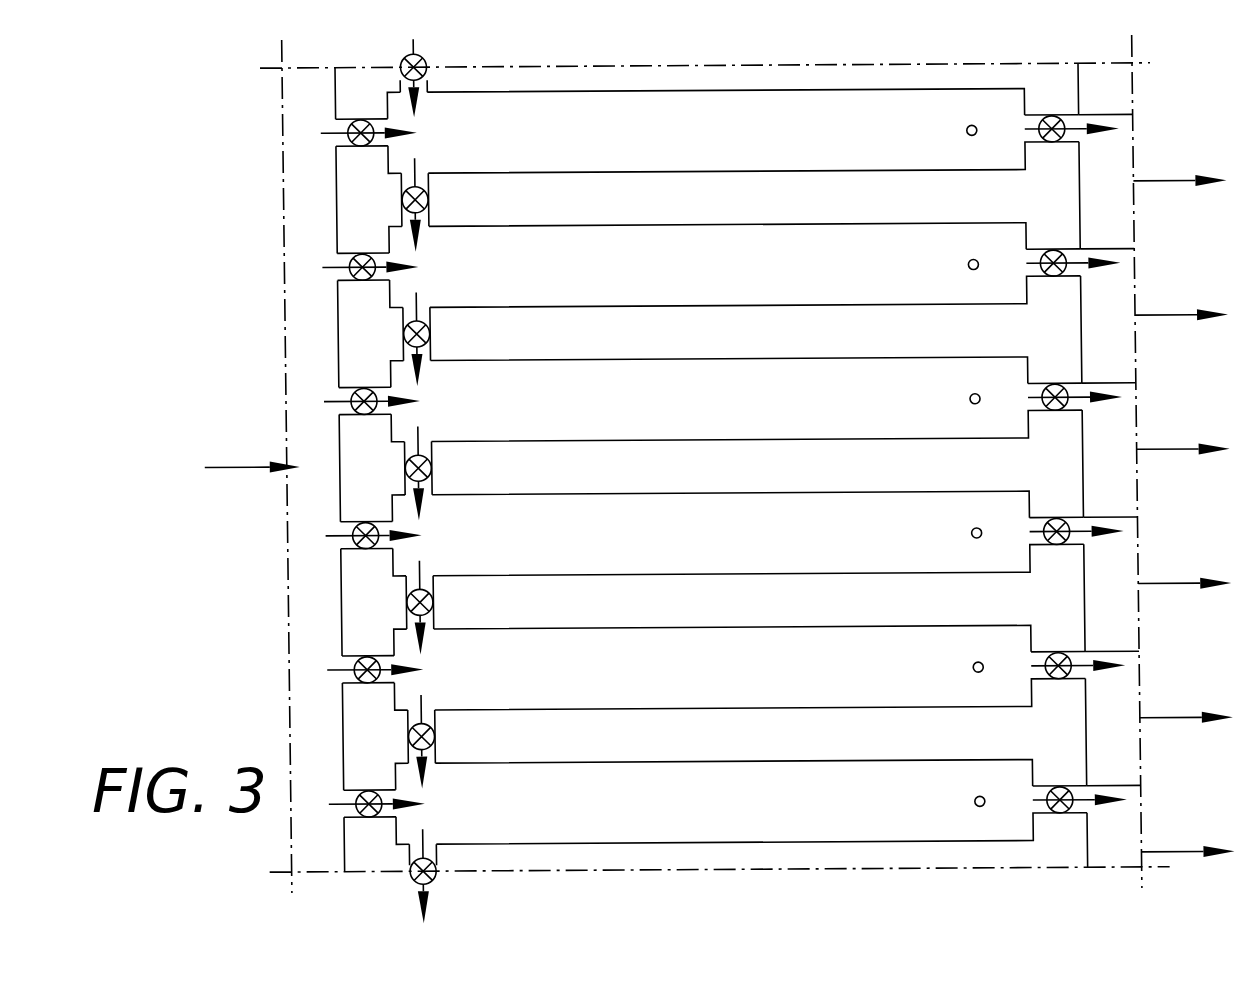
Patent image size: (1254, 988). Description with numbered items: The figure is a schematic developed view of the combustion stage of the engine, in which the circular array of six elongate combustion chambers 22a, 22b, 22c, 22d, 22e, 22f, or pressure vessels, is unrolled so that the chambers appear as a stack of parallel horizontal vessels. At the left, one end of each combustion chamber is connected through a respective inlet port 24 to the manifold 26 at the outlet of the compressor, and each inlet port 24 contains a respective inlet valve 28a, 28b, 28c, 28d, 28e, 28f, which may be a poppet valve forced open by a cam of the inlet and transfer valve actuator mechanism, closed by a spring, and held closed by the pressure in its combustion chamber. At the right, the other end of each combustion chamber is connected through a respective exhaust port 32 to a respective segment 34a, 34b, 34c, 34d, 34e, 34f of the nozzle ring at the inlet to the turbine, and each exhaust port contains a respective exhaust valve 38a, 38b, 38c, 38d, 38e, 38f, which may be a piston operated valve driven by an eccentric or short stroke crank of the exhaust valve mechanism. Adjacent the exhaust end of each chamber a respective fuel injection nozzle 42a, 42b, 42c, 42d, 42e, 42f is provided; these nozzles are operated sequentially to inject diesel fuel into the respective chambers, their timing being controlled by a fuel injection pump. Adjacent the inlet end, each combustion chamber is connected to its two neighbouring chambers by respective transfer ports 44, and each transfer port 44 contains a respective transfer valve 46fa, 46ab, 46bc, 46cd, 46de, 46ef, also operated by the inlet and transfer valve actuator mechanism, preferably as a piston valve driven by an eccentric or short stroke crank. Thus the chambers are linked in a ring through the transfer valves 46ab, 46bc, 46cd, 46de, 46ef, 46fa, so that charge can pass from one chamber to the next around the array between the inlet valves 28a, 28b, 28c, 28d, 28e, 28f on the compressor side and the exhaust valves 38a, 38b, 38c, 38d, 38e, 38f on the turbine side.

The combustion chamber 22a is at (703, 105).
The combustion chamber 22b is at (703, 239).
The combustion chamber 22c is at (703, 373).
The combustion chamber 22d is at (703, 508).
The combustion chamber 22e is at (703, 642).
The combustion chamber 22f is at (703, 776).
The inlet port 24 is at (335, 257).
The manifold 26 is at (300, 340).
The inlet valve 28a is at (351, 148).
The inlet valve 28b is at (351, 282).
The inlet valve 28c is at (351, 416).
The inlet valve 28d is at (351, 550).
The inlet valve 28e is at (351, 684).
The inlet valve 28f is at (351, 818).
The exhaust port 32 is at (1108, 242).
The segment of nozzle ring 34a is at (1119, 156).
The segment of nozzle ring 34b is at (1119, 291).
The segment of nozzle ring 34c is at (1119, 425).
The segment of nozzle ring 34d is at (1119, 559).
The segment of nozzle ring 34e is at (1119, 693).
The segment of nozzle ring 34f is at (1119, 828).
The exhaust valve 38a is at (1051, 120).
The exhaust valve 38b is at (1051, 254).
The exhaust valve 38c is at (1051, 388).
The exhaust valve 38d is at (1051, 522).
The exhaust valve 38e is at (1051, 656).
The exhaust valve 38f is at (1051, 790).
The fuel injection nozzle 42a is at (966, 141).
The fuel injection nozzle 42b is at (966, 275).
The fuel injection nozzle 42c is at (966, 409).
The fuel injection nozzle 42d is at (966, 544).
The fuel injection nozzle 42e is at (966, 678).
The fuel injection nozzle 42f is at (966, 812).
The transfer port 44 is at (352, 692).
The transfer valve 46fa is at (427, 73).
The transfer valve 46ab is at (427, 206).
The transfer valve 46bc is at (427, 340).
The transfer valve 46cd is at (427, 474).
The transfer valve 46de is at (427, 608).
The transfer valve 46ef is at (427, 742).